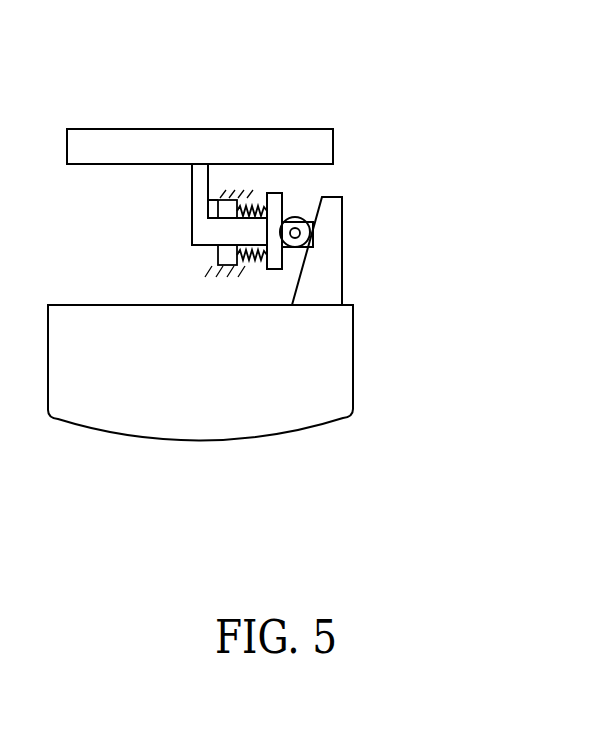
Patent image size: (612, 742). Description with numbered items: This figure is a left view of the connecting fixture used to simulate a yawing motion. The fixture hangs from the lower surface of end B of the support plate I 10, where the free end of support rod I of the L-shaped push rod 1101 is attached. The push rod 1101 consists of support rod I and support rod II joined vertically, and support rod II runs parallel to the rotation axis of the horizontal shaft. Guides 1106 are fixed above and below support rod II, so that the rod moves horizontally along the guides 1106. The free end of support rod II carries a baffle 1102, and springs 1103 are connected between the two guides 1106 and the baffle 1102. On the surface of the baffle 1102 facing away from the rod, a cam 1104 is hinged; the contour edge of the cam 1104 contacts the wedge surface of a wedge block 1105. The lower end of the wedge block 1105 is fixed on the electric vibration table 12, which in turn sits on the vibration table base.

The support plate I 10 is at (110, 137).
The electric vibration table 12 is at (290, 408).
The push rod 1101 is at (197, 183).
The baffle 1102 is at (278, 260).
The spring 1103 is at (253, 205).
The cam 1104 is at (297, 215).
The wedge block 1105 is at (332, 223).
The guide 1106 is at (233, 257).